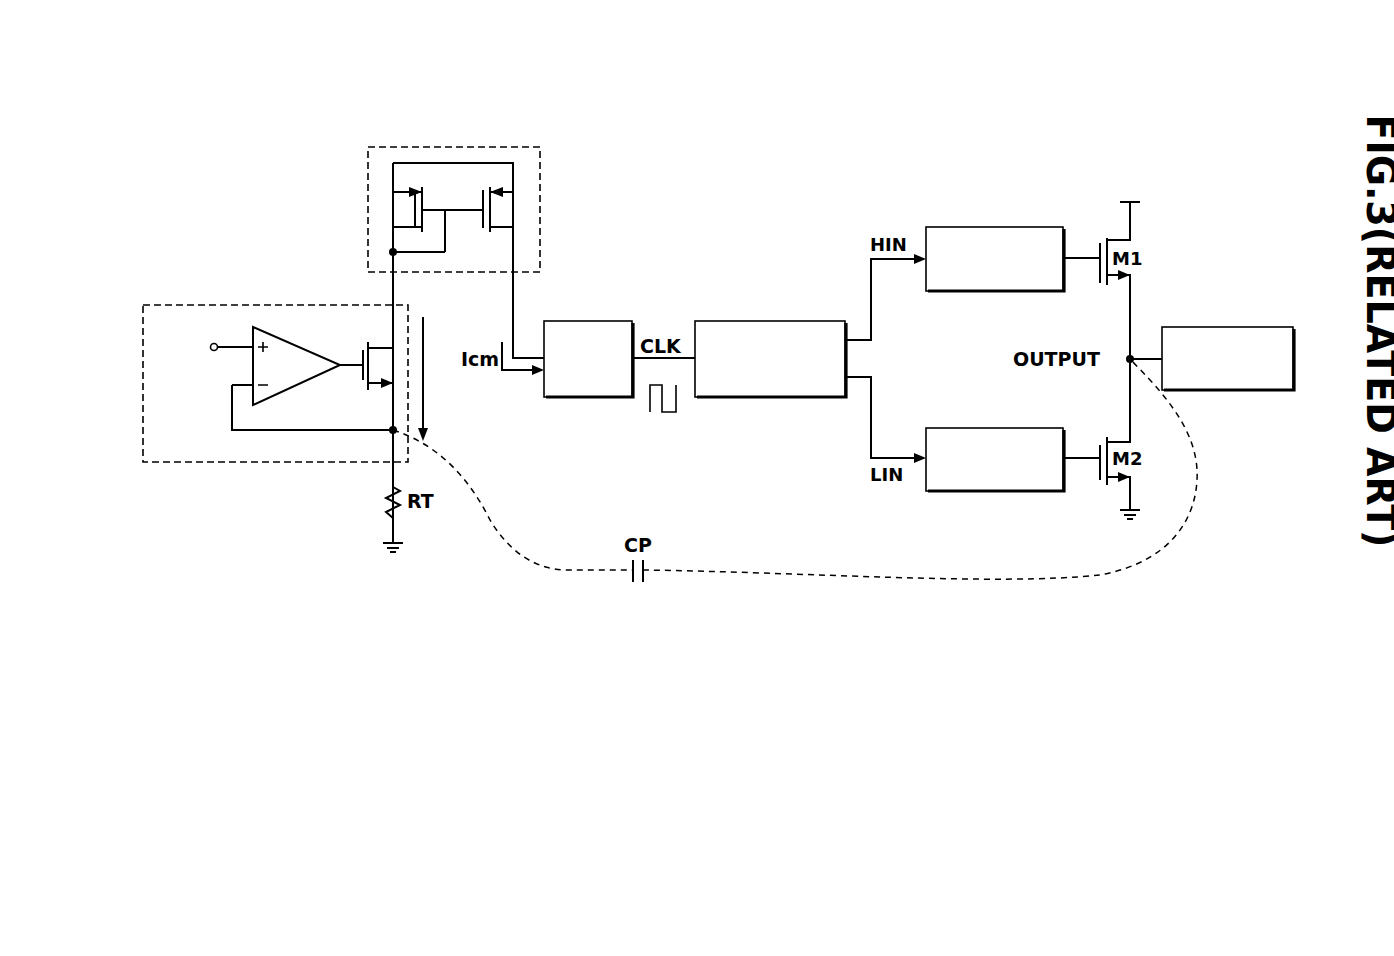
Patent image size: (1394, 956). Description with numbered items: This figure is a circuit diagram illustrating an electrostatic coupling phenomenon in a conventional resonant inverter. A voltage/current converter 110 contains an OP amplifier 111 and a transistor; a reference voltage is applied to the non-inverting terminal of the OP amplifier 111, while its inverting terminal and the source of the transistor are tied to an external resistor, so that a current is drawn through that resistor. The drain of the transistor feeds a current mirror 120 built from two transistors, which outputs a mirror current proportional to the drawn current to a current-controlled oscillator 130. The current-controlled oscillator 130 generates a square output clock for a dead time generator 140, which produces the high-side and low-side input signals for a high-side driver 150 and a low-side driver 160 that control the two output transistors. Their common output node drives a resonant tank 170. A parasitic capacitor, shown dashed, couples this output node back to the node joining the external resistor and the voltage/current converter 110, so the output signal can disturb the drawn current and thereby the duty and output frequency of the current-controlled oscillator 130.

The voltage/current converter 110 is at (143, 370).
The OP amplifier 111 is at (302, 347).
The current mirror 120 is at (368, 207).
The current-controlled oscillator (CCO) 130 is at (590, 321).
The dead time generator 140 is at (771, 321).
The high-side driver 150 is at (997, 227).
The low-side driver 160 is at (990, 491).
The resonant tank 170 is at (1229, 327).